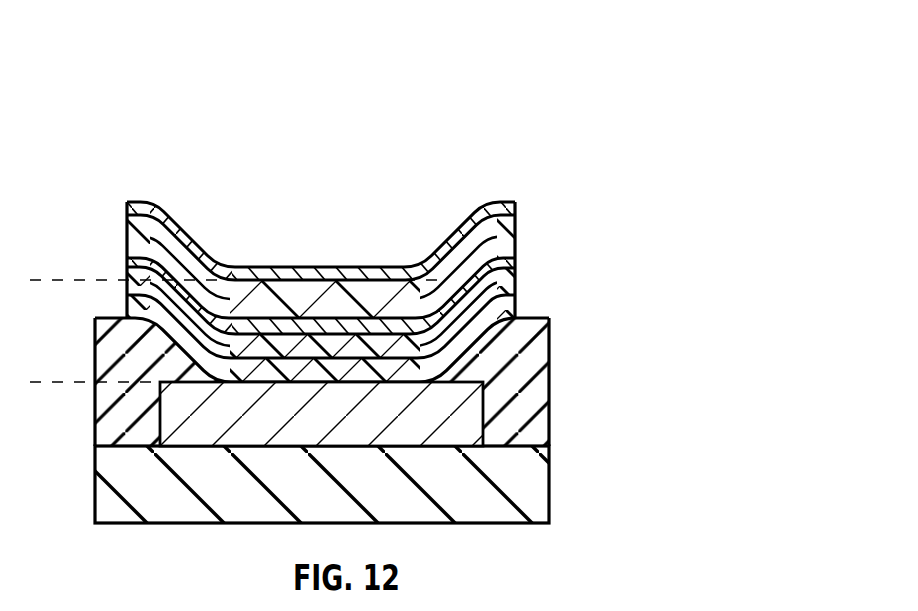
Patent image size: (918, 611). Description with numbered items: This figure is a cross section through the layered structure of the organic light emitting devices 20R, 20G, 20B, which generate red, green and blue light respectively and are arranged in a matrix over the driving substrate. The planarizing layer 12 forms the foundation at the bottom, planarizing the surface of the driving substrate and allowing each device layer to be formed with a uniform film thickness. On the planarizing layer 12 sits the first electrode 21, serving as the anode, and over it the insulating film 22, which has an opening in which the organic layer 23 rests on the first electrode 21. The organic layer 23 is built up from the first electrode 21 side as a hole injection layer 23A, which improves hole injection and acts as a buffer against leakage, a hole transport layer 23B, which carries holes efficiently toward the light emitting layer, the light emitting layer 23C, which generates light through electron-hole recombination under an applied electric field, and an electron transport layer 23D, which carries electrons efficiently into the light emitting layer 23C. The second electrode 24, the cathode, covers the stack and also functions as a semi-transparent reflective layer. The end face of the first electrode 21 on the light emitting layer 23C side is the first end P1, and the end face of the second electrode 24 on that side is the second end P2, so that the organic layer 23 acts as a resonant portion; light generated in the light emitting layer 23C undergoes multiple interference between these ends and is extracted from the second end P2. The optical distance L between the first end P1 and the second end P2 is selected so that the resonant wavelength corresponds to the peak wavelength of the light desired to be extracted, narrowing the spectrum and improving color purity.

The organic light emitting device generating red light 20R is at (510, 75).
The organic light emitting device generating green light 20G is at (322, 362).
The organic light emitting device generating blue light 20B is at (322, 362).
The planarizing layer 12 is at (549, 491).
The first electrode 21 is at (470, 426).
The insulating film 22 is at (549, 347).
The organic layer 23 is at (610, 197).
The hole injection layer 23A is at (516, 300).
The hole transport layer 23B is at (516, 270).
The light emitting layer 23C is at (516, 242).
The electron transport layer 23D is at (516, 223).
The second electrode 24 is at (514, 204).
The first end P1 is at (280, 385).
The second end P2 is at (272, 279).
The optical distance L is at (42, 283).